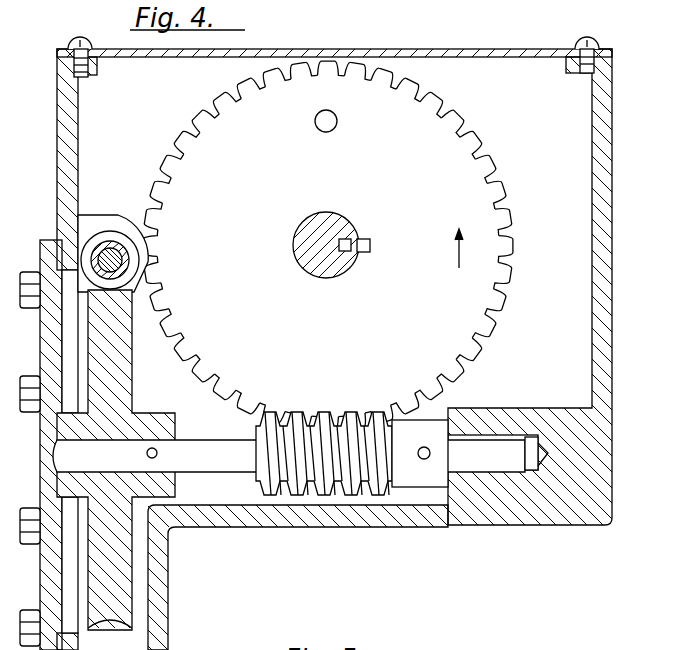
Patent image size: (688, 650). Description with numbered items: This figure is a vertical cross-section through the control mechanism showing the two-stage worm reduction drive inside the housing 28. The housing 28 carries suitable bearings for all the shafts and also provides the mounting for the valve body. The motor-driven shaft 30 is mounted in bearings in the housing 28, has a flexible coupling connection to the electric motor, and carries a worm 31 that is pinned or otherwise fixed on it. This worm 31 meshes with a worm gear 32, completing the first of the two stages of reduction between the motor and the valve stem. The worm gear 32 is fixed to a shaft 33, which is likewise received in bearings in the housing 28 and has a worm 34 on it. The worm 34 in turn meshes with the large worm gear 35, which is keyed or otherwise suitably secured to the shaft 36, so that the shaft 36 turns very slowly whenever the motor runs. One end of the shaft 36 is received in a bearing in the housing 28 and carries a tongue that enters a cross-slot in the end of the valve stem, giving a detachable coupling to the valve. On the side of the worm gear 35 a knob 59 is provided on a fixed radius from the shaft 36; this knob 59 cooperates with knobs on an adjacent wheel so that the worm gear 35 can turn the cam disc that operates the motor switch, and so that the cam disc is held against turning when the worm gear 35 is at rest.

The housing 28 is at (614, 262).
The shaft 30 is at (120, 260).
The worm 31 is at (108, 238).
The worm gear 32 is at (125, 375).
The shaft 33 is at (197, 447).
The worm 34 is at (263, 473).
The worm gear 35 is at (478, 307).
The shaft 36 is at (316, 272).
The knob 59 is at (337, 121).